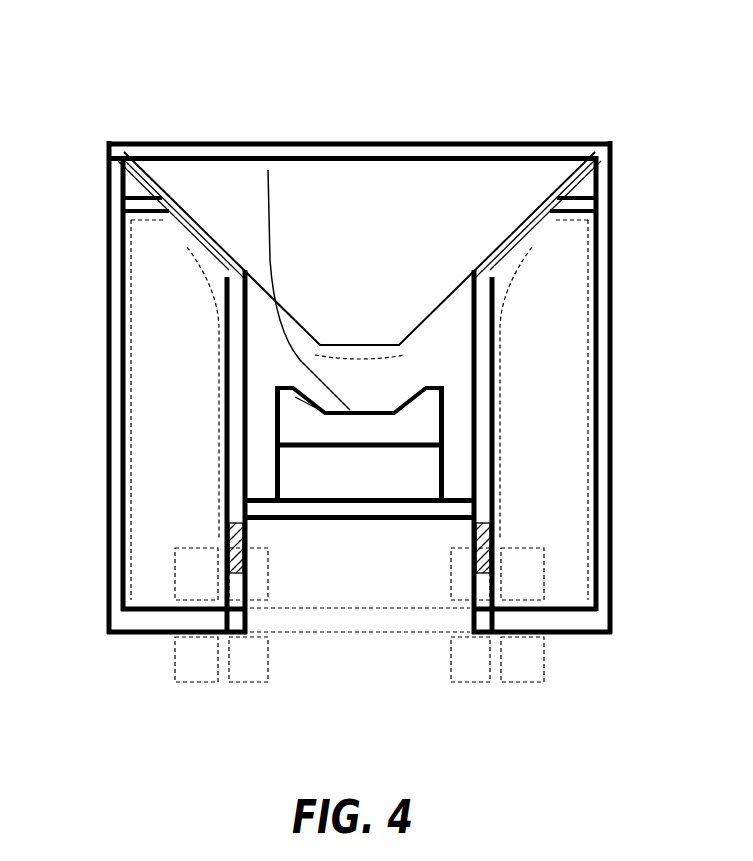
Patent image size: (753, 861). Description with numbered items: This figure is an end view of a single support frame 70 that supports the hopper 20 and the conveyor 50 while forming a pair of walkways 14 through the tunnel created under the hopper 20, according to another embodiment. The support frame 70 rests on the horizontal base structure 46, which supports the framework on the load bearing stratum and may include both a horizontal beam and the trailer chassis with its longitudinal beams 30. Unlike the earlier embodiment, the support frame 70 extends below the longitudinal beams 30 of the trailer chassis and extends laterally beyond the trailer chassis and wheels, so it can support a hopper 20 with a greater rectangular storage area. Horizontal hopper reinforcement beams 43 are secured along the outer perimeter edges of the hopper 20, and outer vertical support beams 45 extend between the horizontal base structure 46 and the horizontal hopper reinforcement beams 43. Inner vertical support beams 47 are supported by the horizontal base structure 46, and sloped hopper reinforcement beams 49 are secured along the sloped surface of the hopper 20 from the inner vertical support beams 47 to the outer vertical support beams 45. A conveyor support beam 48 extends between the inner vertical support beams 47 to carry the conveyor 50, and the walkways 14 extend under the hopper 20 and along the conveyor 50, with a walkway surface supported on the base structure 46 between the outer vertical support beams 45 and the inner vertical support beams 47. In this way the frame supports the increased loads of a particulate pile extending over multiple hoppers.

The support frame 70 is at (118, 98).
The horizontal hopper reinforcement beams 43 is at (372, 150).
The outer vertical support beams 45 is at (112, 367).
The walkways 14 is at (127, 538).
The horizontal base structure 46 is at (148, 620).
The inner vertical support beams 47 is at (232, 433).
The sloped hopper reinforcement beams 49 is at (185, 242).
The hopper 20 is at (348, 268).
The conveyor support beam 48 is at (341, 510).
The longitudinal beams 30 is at (223, 535).
The conveyor 50 is at (268, 170).